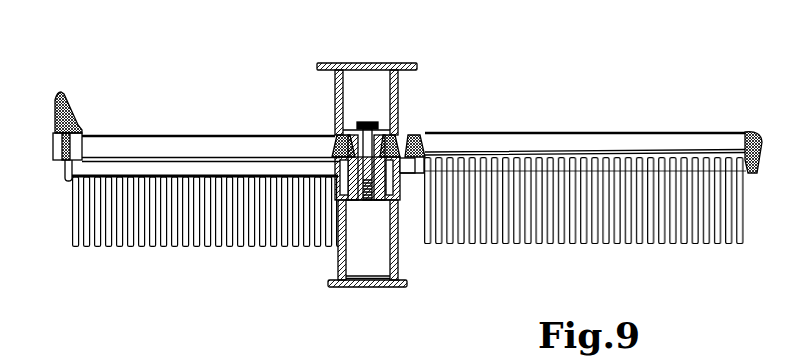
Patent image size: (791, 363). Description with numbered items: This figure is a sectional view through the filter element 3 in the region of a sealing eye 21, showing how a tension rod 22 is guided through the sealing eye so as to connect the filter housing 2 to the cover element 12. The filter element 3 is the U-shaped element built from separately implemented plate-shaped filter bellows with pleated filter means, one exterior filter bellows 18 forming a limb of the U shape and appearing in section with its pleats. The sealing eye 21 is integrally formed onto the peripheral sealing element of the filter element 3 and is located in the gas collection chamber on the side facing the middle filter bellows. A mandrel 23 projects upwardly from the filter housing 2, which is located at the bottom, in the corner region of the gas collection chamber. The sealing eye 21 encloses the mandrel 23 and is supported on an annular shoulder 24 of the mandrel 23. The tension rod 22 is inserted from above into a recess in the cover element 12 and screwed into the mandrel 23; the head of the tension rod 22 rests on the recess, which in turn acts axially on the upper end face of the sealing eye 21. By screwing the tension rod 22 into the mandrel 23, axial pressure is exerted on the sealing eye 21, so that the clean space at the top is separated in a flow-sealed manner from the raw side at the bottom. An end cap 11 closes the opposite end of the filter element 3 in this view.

The filter housing 2 is at (400, 264).
The filter element 3 is at (675, 133).
The end cap 11 is at (72, 101).
The cover element 12 is at (398, 92).
The filter bellows 18 is at (78, 226).
The sealing eye 21 is at (335, 148).
The tension rod 22 is at (367, 121).
The mandrel 23 is at (362, 203).
The annular shoulder 24 is at (338, 175).